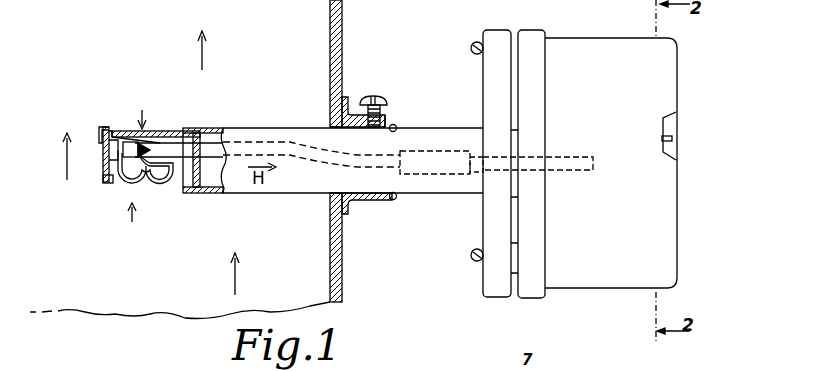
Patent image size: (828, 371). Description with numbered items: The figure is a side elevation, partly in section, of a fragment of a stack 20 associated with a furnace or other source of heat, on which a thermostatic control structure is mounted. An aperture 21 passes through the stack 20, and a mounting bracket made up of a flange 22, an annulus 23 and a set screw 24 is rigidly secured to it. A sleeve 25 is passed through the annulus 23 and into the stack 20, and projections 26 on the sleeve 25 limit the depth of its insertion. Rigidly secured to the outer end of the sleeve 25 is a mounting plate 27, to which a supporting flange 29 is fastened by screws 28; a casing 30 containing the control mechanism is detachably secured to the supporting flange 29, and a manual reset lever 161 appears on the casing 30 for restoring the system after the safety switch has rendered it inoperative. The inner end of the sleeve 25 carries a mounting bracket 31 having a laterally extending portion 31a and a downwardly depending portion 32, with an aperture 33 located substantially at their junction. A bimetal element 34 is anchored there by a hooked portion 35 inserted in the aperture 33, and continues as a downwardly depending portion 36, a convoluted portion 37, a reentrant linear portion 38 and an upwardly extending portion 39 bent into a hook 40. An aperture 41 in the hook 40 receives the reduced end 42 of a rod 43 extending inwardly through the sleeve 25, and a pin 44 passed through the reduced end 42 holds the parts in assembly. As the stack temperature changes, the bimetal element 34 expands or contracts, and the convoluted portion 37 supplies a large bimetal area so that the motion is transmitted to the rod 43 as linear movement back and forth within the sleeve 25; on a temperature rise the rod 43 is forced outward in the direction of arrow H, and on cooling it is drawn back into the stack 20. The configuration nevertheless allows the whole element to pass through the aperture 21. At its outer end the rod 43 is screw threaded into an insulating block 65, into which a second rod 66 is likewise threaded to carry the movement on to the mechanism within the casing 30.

The stack 20 is at (353, 36).
The aperture 21 is at (330, 203).
The flange 22 is at (350, 206).
The annulus 23 is at (392, 126).
The set screw 24 is at (376, 96).
The sleeve 25 is at (422, 196).
The projections 26 is at (397, 127).
The mounting plate 27 is at (483, 75).
The screws 28 is at (476, 42).
The supporting flange 29 is at (537, 32).
The casing 30 is at (677, 230).
The mounting bracket 31 is at (147, 130).
The laterally extending portion 31a is at (140, 136).
The downwardly depending portion 32 is at (104, 180).
The aperture 33 is at (116, 130).
The bimetal element 34 is at (139, 223).
The hooked portion 35 is at (100, 127).
The downwardly depending portion 36 is at (122, 190).
The convoluted portion 37 is at (146, 188).
The reentrant linear portion 38 is at (165, 143).
The upwardly extending portion 39 is at (108, 178).
The hook 40 is at (113, 147).
The aperture 41 is at (142, 110).
The reduced end 42 is at (128, 155).
The rod 43 is at (207, 150).
The pin 44 is at (146, 146).
The insulating block 65 is at (455, 177).
The second rod 66 is at (574, 172).
The manual reset lever 161 is at (672, 140).